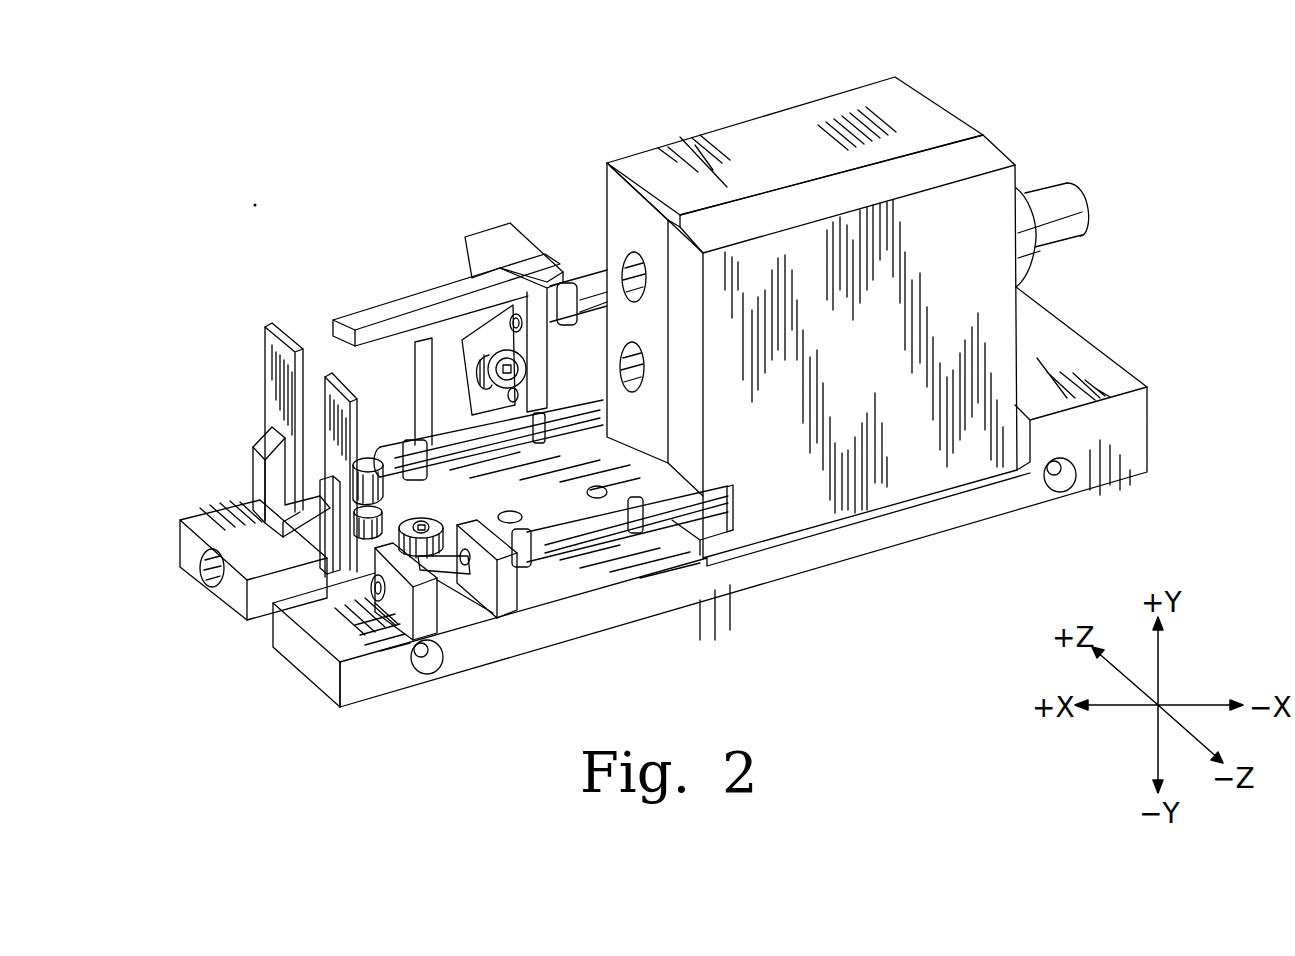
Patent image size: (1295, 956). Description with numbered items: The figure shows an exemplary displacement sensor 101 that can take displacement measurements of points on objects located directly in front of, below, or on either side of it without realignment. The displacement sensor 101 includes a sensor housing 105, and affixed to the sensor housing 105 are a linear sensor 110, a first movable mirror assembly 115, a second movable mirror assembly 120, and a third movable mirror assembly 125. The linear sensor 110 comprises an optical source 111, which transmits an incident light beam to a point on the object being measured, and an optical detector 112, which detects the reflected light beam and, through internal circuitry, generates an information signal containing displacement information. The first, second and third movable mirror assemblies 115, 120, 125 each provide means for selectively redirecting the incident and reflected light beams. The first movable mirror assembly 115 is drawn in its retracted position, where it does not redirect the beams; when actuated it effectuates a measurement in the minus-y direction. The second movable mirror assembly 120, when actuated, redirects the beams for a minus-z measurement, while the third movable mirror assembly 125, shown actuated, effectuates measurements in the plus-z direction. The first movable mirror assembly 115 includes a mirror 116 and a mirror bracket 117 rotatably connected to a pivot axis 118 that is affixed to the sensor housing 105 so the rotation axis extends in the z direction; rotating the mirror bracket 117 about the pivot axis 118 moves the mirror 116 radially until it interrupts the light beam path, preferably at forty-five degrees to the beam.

The displacement sensor 101 is at (1082, 68).
The sensor housing 105 is at (762, 583).
The linear sensor 110 is at (920, 114).
The optical source 111 is at (640, 373).
The optical detector 112 is at (625, 262).
The first movable mirror assembly 115 is at (484, 208).
The mirror 116 is at (376, 310).
The mirror bracket 117 is at (512, 236).
The pivot axis 118 is at (508, 369).
The second movable mirror assembly 120 is at (240, 378).
The third movable mirror assembly 125 is at (473, 684).